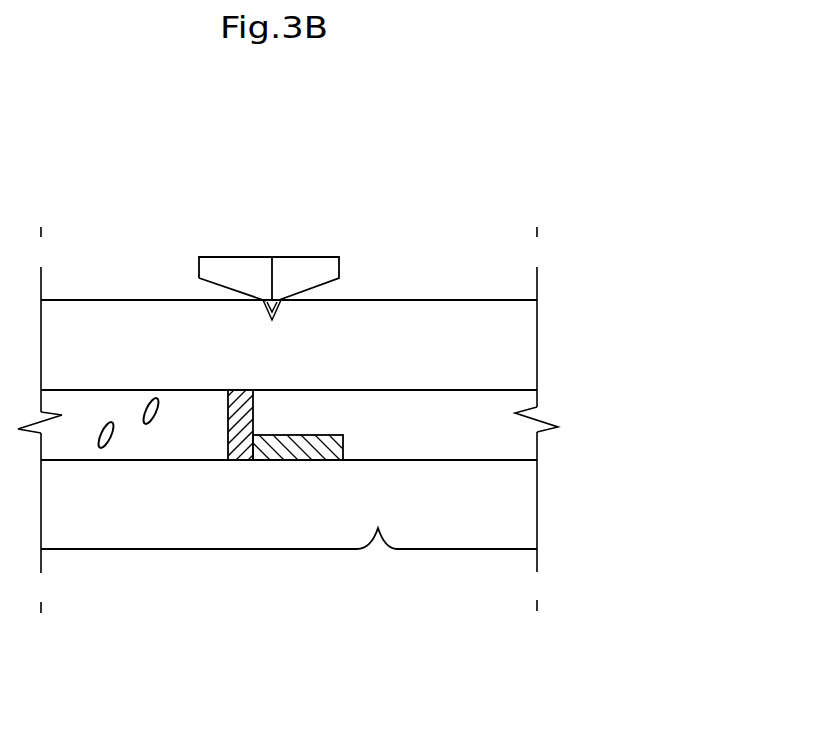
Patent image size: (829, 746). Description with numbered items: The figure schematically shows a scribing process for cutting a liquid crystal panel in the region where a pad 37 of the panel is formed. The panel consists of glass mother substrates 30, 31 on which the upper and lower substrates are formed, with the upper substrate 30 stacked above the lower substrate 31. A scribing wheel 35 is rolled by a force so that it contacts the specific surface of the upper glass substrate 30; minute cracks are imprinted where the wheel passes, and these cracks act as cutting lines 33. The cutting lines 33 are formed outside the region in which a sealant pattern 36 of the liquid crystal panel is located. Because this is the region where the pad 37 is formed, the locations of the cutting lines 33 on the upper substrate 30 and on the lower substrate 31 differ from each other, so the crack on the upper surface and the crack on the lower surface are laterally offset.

The upper glass mother substrate 30 is at (518, 356).
The lower glass mother substrate 31 is at (518, 517).
The cutting line 33 is at (275, 304).
The scribing wheel 35 is at (310, 268).
The sealant pattern 36 is at (240, 445).
The pad 37 is at (303, 455).